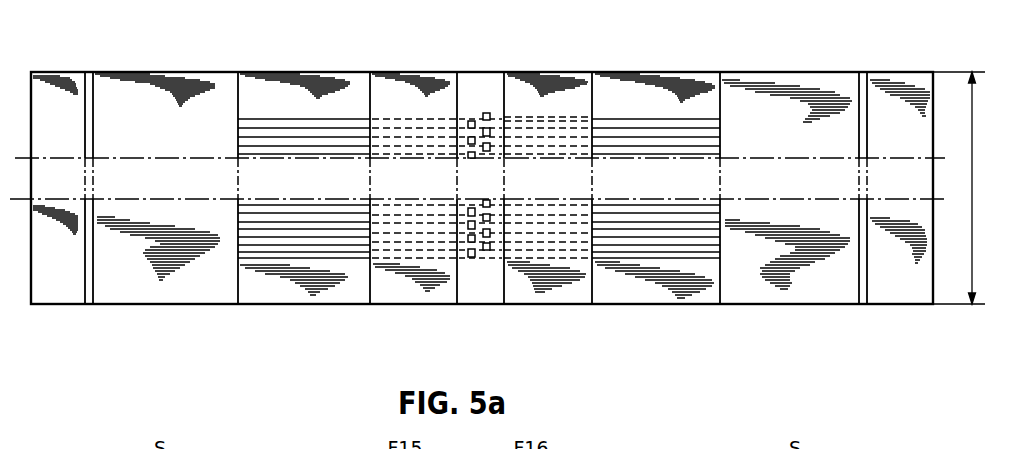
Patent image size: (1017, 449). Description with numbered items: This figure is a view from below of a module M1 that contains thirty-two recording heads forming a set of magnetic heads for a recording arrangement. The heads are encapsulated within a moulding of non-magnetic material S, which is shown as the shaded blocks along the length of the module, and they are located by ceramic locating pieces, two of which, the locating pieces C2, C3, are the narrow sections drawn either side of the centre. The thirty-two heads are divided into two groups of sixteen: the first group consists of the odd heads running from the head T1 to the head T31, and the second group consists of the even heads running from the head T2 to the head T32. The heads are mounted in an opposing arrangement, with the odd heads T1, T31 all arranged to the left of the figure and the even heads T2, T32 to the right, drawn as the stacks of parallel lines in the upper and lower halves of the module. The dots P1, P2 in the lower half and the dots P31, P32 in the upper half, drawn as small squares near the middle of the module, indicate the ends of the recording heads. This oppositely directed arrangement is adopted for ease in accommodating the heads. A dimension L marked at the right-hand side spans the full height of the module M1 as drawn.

The module M1 is at (752, 72).
The moulding of non-magnetic material S is at (63, 92).
The odd recording head T31 is at (311, 122).
The even recording head T32 is at (625, 118).
The odd recording head T1 is at (290, 252).
The even recording head T2 is at (687, 248).
The ceramic locating piece C2 is at (405, 285).
The ceramic locating piece C3 is at (557, 282).
The dot indicating end of recording head P31 is at (470, 121).
The dot indicating end of recording head P32 is at (486, 113).
The dot indicating end of recording head P1 is at (472, 257).
The dot indicating end of recording head P2 is at (487, 250).
The length dimension L is at (962, 188).